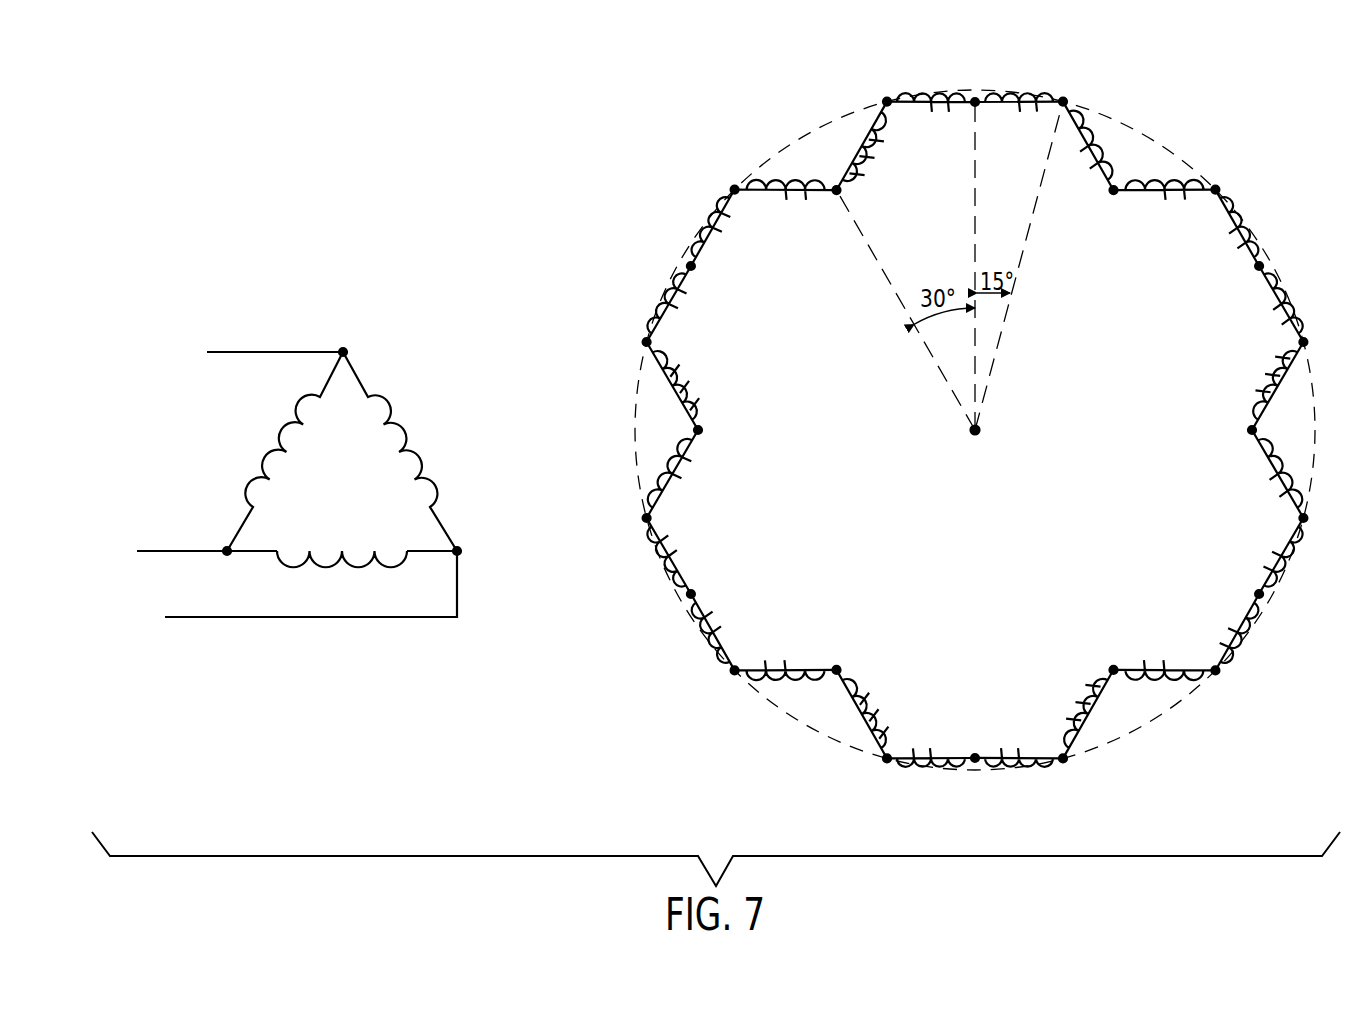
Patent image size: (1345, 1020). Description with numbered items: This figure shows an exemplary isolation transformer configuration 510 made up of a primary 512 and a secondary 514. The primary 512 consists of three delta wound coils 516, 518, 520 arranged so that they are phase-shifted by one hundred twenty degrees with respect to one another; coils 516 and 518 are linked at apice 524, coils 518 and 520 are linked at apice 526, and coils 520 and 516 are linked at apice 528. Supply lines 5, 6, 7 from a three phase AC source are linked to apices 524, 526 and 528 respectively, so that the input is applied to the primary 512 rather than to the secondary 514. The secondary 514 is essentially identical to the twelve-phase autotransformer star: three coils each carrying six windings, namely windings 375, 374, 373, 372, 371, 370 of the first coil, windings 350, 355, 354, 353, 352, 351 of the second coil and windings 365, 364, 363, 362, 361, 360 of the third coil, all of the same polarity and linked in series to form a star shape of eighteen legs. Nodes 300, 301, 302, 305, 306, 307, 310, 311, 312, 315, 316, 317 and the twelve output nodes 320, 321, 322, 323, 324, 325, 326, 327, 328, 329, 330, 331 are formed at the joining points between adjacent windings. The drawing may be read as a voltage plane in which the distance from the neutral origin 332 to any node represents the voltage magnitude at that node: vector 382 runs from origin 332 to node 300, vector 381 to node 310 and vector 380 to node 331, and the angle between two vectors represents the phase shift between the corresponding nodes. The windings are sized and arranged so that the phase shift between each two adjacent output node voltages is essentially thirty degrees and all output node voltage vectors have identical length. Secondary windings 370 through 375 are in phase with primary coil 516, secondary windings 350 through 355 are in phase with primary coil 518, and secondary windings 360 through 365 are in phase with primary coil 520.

The supply line 5 is at (232, 351).
The supply line 6 is at (197, 549).
The supply line 7 is at (195, 618).
The isolation transformer configuration 510 is at (418, 218).
The primary 512 is at (256, 331).
The secondary 514 is at (692, 127).
The coil 516 is at (360, 376).
The coil 518 is at (253, 550).
The coil 520 is at (262, 462).
The apice 524 is at (488, 527).
The apice 526 is at (225, 553).
The apice 528 is at (346, 351).
The node 300 is at (842, 192).
The node 301 is at (838, 669).
The node 302 is at (1250, 431).
The node 305 is at (1112, 197).
The node 306 is at (700, 430).
The node 307 is at (1112, 668).
The node 310 is at (978, 105).
The node 311 is at (693, 595).
The node 312 is at (1252, 594).
The node 315 is at (1258, 267).
The node 316 is at (697, 268).
The node 317 is at (974, 754).
The output node 320 is at (886, 100).
The output node 321 is at (733, 187).
The output node 322 is at (645, 343).
The output node 323 is at (646, 520).
The output node 324 is at (733, 673).
The output node 325 is at (889, 753).
The output node 326 is at (1058, 754).
The output node 327 is at (1203, 665).
The output node 328 is at (1302, 519).
The output node 329 is at (1305, 342).
The output node 330 is at (1217, 185).
The output node 331 is at (1066, 100).
The origin 332 is at (978, 432).
The winding 350 is at (1150, 181).
The winding 351 is at (925, 95).
The winding 352 is at (766, 197).
The winding 353 is at (775, 680).
The winding 354 is at (957, 771).
The winding 355 is at (1137, 677).
The winding 360 is at (853, 140).
The winding 361 is at (686, 243).
The winding 362 is at (662, 475).
The winding 363 is at (1075, 737).
The winding 364 is at (1247, 643).
The winding 365 is at (1267, 400).
The winding 370 is at (680, 414).
The winding 371 is at (707, 643).
The winding 372 is at (853, 718).
The winding 373 is at (1285, 442).
The winding 374 is at (1265, 240).
The winding 375 is at (1093, 137).
The vector 380 is at (1032, 231).
The vector 381 is at (978, 213).
The vector 382 is at (878, 279).